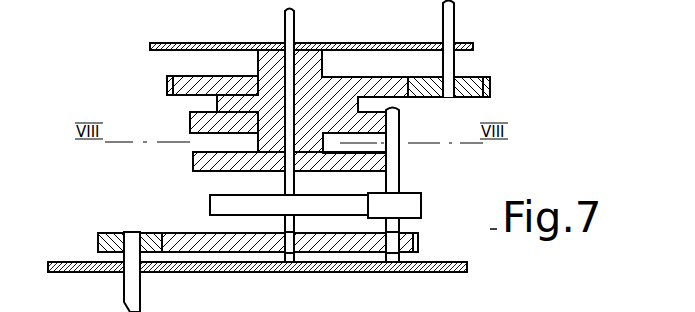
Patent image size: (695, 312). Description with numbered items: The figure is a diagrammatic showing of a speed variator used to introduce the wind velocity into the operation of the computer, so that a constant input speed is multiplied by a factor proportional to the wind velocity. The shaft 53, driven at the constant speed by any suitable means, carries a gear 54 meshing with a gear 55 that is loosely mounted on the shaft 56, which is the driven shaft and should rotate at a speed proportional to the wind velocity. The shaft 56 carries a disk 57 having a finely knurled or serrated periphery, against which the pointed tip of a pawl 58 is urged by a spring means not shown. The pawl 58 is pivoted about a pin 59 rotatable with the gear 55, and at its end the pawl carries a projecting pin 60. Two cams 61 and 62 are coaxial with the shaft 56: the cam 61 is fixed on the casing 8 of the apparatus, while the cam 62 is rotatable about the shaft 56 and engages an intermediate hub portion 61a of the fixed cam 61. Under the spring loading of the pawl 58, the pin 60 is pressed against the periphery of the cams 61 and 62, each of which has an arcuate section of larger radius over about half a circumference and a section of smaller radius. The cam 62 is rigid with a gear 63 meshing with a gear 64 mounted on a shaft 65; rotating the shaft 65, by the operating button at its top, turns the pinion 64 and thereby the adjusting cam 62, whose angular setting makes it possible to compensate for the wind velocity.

The casing 8 is at (163, 42).
The shaft 53 is at (133, 287).
The gear 54 is at (108, 232).
The gear 55 is at (402, 242).
The shaft 56 is at (296, 22).
The disk 57 is at (216, 203).
The pawl 58 is at (410, 203).
The pin 59 is at (402, 273).
The projecting pin 60 is at (393, 140).
The cam 61 is at (193, 163).
The intermediate hub portion 61a is at (257, 62).
The cam 62 is at (200, 124).
The gear 63 is at (165, 83).
The gear 64 is at (491, 87).
The shaft 65 is at (451, 15).